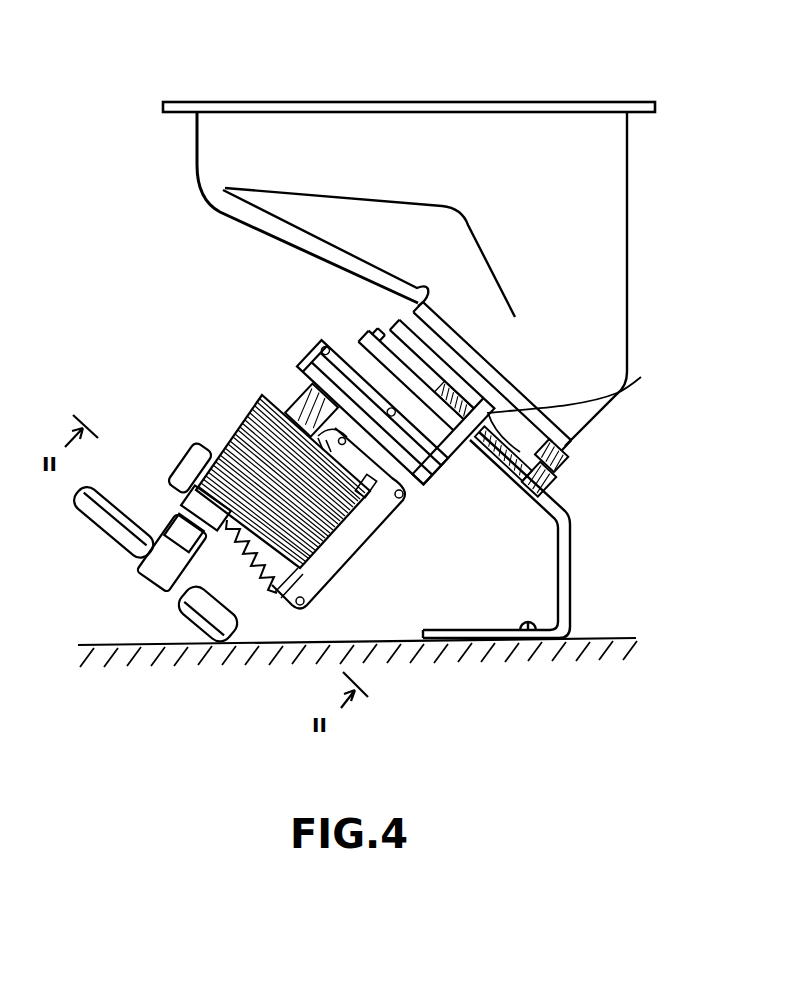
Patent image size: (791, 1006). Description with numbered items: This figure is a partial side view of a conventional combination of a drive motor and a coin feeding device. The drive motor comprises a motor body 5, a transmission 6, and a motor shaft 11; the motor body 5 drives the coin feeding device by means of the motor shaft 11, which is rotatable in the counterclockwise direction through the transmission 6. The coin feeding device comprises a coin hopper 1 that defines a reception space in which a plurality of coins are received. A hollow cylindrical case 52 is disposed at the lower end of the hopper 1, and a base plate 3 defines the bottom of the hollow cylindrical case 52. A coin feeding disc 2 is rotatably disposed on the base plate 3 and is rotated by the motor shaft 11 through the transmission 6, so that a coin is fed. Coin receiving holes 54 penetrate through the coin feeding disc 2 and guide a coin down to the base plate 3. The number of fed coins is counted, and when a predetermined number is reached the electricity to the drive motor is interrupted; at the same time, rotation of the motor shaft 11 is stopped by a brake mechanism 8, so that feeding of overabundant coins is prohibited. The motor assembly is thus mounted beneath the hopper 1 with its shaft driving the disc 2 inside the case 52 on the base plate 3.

The coin hopper 1 is at (608, 188).
The coin feeding disc 2 is at (618, 392).
The base plate 3 is at (557, 505).
The motor body 5 is at (248, 428).
The transmission 6 is at (310, 348).
The brake mechanism 8 is at (247, 565).
The motor shaft 11 is at (300, 398).
The hollow cylindrical case 52 is at (553, 487).
The coin receiving holes 54 is at (567, 445).